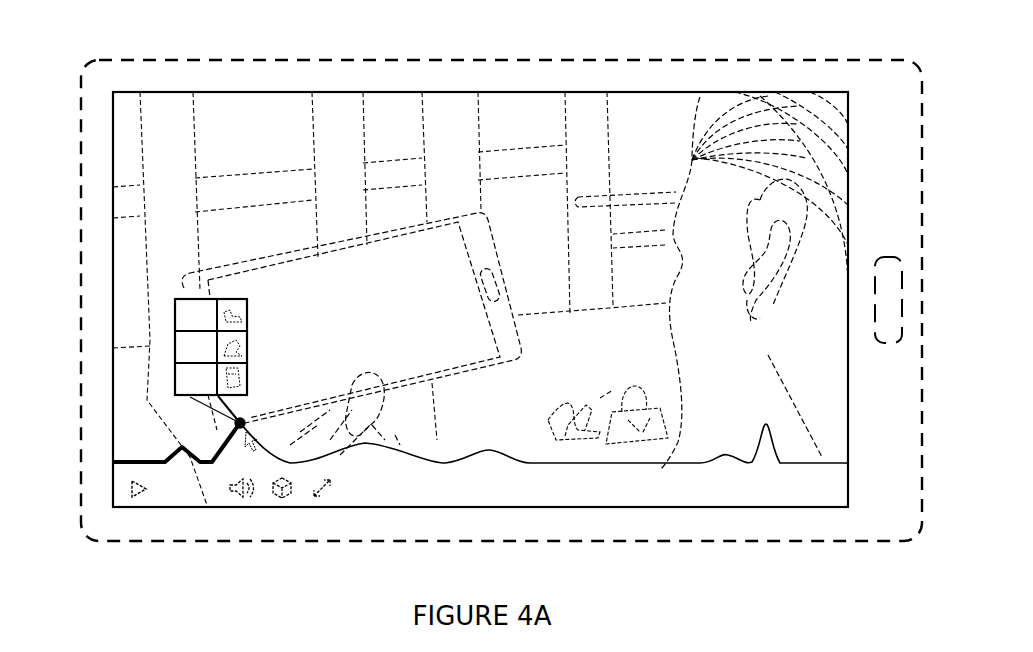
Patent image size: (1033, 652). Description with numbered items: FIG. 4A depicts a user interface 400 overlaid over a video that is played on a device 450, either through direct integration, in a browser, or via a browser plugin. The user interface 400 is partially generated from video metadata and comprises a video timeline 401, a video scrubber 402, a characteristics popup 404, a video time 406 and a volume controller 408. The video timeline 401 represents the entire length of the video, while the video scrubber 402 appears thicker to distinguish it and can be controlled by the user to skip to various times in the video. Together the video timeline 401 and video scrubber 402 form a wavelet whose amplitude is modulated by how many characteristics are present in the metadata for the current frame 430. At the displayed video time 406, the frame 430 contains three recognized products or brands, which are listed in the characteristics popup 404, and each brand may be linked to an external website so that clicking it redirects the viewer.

The user interface 400 is at (111, 21).
The video timeline 401 is at (548, 467).
The video scrubber 402 is at (125, 458).
The characteristics popup 404 is at (173, 308).
The video time 406 is at (162, 498).
The volume controller 408 is at (240, 500).
The frame 430 is at (367, 90).
The device 450 is at (657, 58).